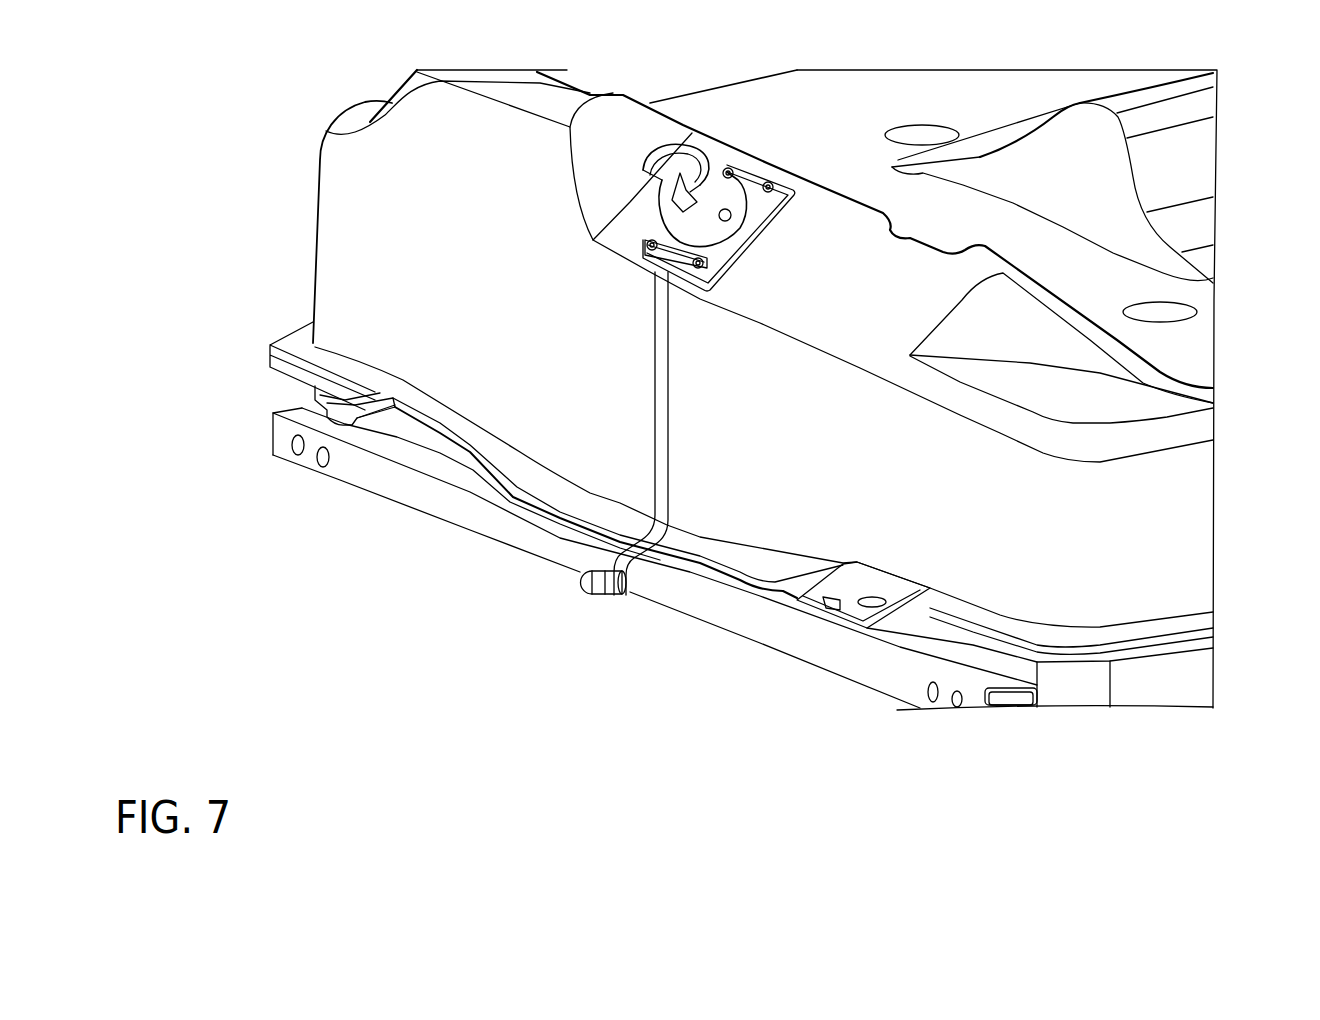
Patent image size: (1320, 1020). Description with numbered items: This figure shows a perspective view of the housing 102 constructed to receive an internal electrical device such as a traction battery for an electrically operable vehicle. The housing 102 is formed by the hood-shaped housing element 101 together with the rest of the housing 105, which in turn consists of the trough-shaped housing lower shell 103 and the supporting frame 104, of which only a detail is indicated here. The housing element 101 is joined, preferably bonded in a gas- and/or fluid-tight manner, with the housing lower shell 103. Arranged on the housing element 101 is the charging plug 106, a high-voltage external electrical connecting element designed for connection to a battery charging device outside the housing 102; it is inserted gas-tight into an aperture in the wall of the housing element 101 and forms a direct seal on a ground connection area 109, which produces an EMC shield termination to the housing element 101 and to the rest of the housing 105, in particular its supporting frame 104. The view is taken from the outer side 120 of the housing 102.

The housing element 101 is at (320, 156).
The housing 102 is at (266, 317).
The housing lower shell 103 is at (1148, 690).
The supporting frame 104 is at (422, 488).
The rest of the housing 105 is at (282, 440).
The charging plug 106 is at (713, 177).
The ground connection area 109 is at (661, 392).
The outer side 120 is at (1127, 193).